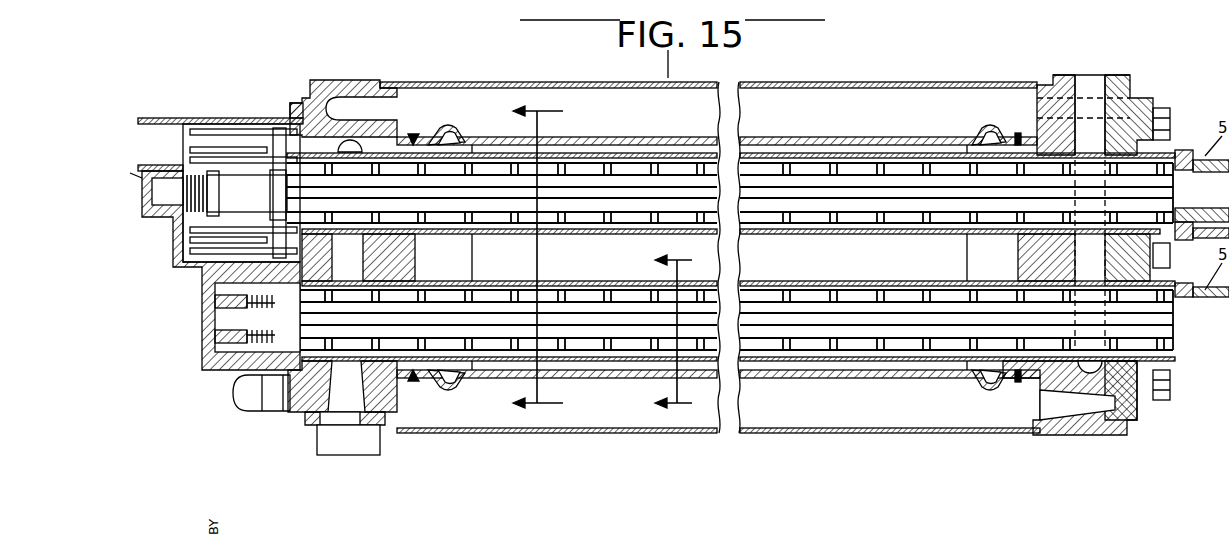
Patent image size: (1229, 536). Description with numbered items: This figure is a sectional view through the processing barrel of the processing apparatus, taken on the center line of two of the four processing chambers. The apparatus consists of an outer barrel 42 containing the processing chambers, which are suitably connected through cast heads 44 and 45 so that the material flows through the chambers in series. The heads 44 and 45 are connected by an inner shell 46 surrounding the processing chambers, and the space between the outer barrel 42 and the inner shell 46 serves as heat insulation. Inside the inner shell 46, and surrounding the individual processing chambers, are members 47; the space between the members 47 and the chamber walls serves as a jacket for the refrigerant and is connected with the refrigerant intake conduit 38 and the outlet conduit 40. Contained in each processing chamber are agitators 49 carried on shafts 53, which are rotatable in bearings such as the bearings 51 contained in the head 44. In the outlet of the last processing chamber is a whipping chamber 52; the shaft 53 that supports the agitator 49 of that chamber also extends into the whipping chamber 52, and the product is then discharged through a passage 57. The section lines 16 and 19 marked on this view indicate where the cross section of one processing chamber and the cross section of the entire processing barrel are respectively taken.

The section line 16— 16 is at (673, 332).
The section line 19— 19 is at (553, 258).
The conduit 38 is at (352, 452).
The outlet conduit 40 is at (1098, 80).
The outer barrel 42 is at (822, 81).
The cast head 44 is at (338, 82).
The cast head 45 is at (1112, 432).
The inner shell 46 is at (822, 140).
The members 47 is at (648, 151).
The agitators 49 is at (897, 190).
The bearings 51 is at (168, 206).
The whipping chamber 52 is at (228, 142).
The shafts 53 is at (768, 180).
The passage 57 is at (163, 140).